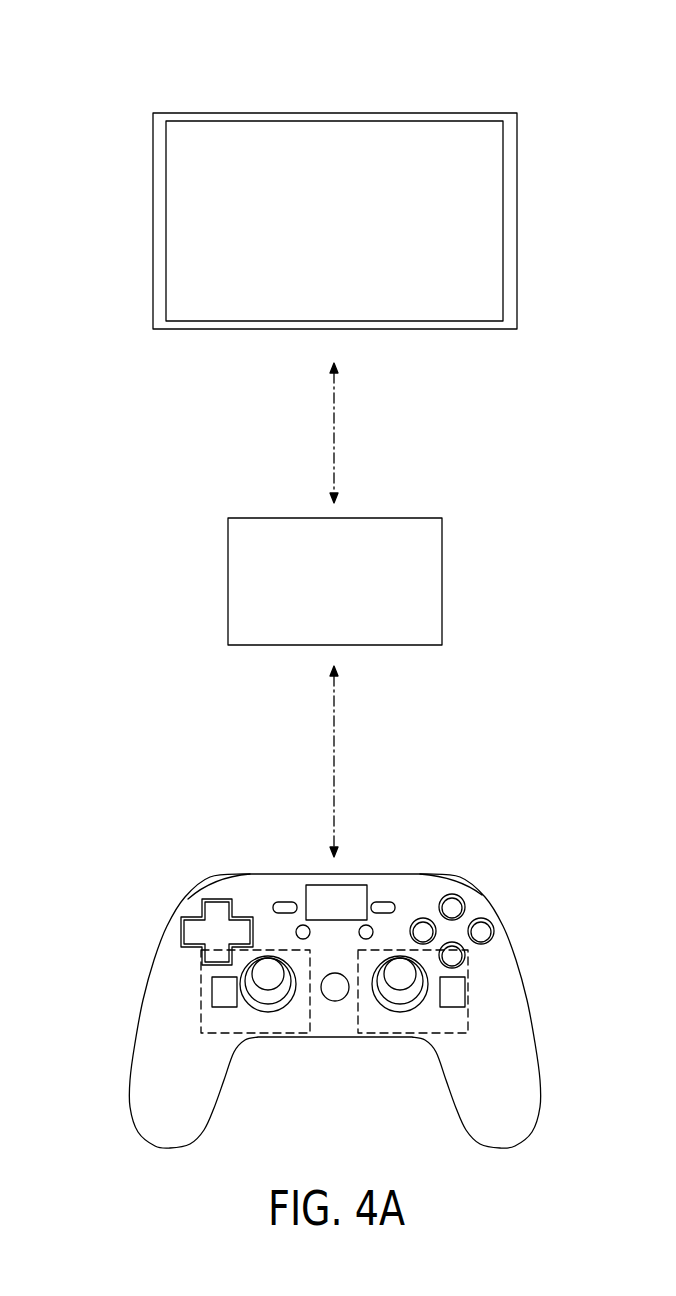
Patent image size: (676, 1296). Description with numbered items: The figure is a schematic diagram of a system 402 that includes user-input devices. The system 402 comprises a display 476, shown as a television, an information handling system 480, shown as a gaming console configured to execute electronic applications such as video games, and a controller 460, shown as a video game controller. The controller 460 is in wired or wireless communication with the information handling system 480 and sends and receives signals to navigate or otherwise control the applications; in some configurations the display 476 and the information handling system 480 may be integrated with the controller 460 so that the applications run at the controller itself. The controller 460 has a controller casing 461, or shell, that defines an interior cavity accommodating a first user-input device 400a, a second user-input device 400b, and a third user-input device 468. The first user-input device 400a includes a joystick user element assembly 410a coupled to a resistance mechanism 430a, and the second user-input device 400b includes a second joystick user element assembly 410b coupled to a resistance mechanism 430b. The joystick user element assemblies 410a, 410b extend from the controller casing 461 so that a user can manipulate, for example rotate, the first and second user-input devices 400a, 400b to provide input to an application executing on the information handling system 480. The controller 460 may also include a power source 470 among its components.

The system 402 is at (78, 70).
The display 476 is at (318, 238).
The information handling system 480 is at (351, 593).
The controller 460 is at (152, 846).
The controller casing 461 is at (128, 1108).
The third user-input device 468 is at (457, 873).
The power source 470 is at (366, 878).
The first user-input device 400a is at (180, 981).
The second user-input device 400b is at (490, 981).
The joystick user element assembly 410a is at (260, 937).
The second joystick user element assembly 410b is at (436, 1016).
The resistance mechanism 430a is at (224, 1008).
The resistance mechanism 430b is at (465, 1008).